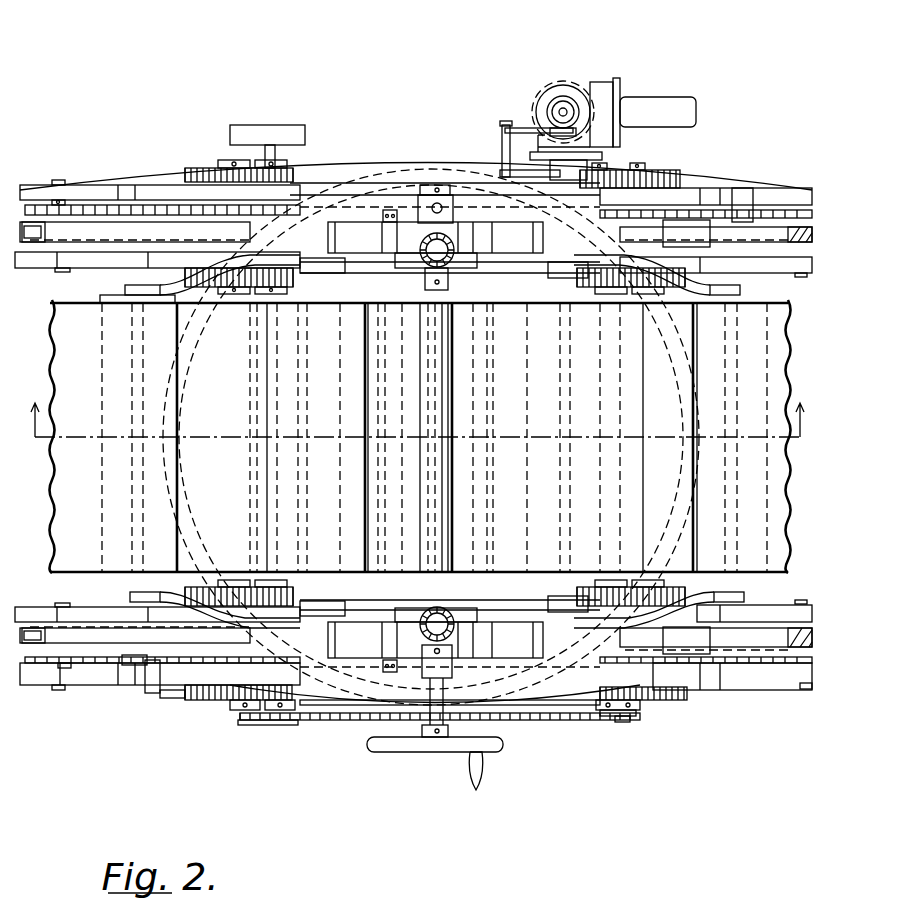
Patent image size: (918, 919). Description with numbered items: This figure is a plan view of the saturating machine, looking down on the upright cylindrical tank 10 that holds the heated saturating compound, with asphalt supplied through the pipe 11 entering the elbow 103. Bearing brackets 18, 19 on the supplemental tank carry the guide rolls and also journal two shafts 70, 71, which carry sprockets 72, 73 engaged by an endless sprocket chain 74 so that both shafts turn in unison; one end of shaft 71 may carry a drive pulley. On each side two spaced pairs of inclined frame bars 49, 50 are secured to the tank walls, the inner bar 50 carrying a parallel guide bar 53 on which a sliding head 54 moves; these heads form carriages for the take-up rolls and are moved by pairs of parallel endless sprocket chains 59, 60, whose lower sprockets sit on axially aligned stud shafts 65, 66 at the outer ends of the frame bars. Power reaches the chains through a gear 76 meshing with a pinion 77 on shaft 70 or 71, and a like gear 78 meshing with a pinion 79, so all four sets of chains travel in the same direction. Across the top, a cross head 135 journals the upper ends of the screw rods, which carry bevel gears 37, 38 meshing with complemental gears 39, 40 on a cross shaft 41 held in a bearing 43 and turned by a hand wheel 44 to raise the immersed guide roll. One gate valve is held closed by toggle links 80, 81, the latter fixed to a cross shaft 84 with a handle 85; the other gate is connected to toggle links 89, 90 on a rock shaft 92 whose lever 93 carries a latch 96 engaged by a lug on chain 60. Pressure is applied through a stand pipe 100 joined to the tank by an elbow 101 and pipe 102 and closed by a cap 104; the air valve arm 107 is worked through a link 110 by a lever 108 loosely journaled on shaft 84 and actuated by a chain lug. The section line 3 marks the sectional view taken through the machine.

The section line 3- 3 is at (413, 409).
The upright cylindrical tank 10 is at (383, 165).
The pipe 11 is at (673, 110).
The bearing bracket 18 is at (717, 297).
The bearing bracket 19 is at (130, 295).
The bevel gear 37 is at (390, 303).
The bevel gear 38 is at (452, 613).
The complemental gear 39 is at (448, 281).
The complemental gear 40 is at (432, 648).
The cross shaft 41 is at (437, 362).
The bearing 43 is at (422, 183).
The hand wheel 44 is at (418, 743).
The inclined bar 49 is at (85, 195).
The inclined bar 50 is at (32, 265).
The guide bar 53 is at (773, 233).
The sliding head 54 is at (30, 222).
The sprocket chain 59 is at (105, 243).
The sprocket chain 60 is at (148, 207).
The stud shaft 65 is at (62, 272).
The stud shaft 66 is at (60, 182).
The shaft 70 is at (607, 717).
The shaft 71 is at (272, 722).
The sprocket 72 is at (637, 710).
The sprocket 73 is at (260, 708).
The endless sprocket chain 74 is at (548, 713).
The gear 76 is at (188, 168).
The pinion 77 is at (300, 185).
The gear 78 is at (177, 305).
The pinion 79 is at (312, 273).
The toggle link 80 is at (445, 425).
The toggle link 81 is at (533, 235).
The cross shaft 84 is at (560, 507).
The handle 85 is at (517, 697).
The toggle link 89 is at (377, 267).
The toggle link 90 is at (330, 235).
The rock shaft 92 is at (303, 500).
The arm or lever 93 is at (168, 693).
The latch 96 is at (140, 667).
The stand pipe 100 is at (566, 100).
The elbow 101 is at (540, 145).
The pipe 102 is at (597, 163).
The elbow 103 is at (598, 93).
The cap 104 is at (550, 87).
The arm 107 is at (550, 133).
The lever 108 is at (695, 222).
The link 110 is at (502, 150).
The cross head 135 is at (448, 397).